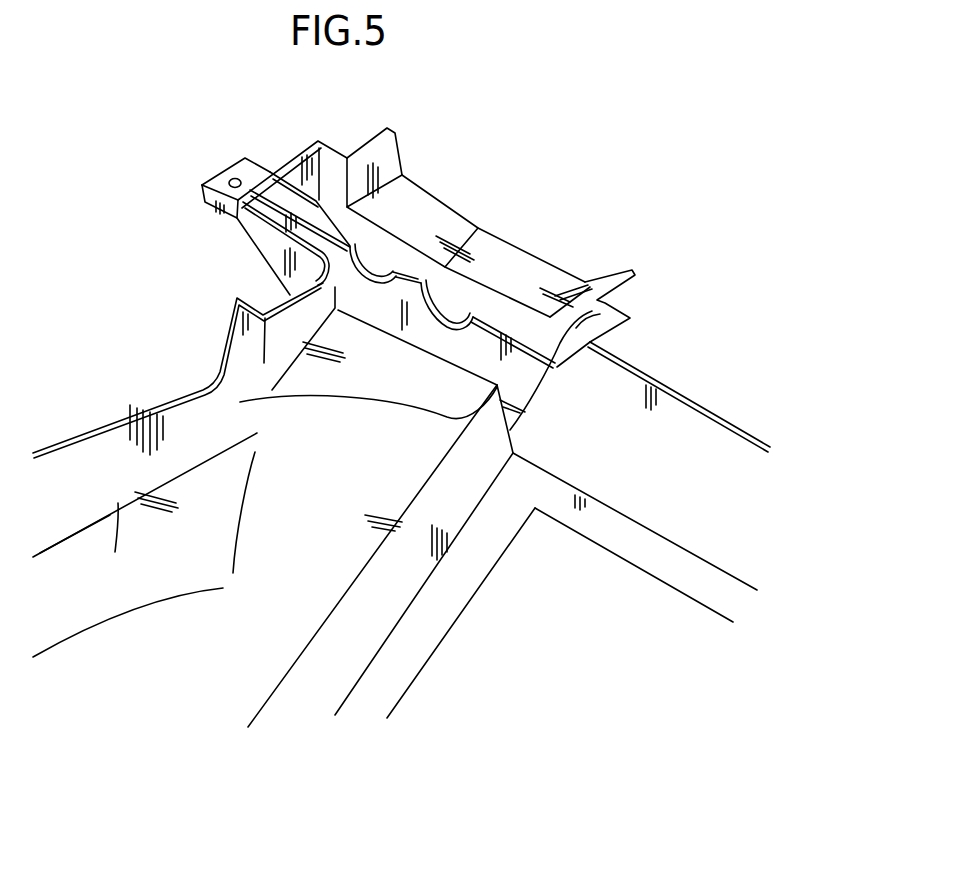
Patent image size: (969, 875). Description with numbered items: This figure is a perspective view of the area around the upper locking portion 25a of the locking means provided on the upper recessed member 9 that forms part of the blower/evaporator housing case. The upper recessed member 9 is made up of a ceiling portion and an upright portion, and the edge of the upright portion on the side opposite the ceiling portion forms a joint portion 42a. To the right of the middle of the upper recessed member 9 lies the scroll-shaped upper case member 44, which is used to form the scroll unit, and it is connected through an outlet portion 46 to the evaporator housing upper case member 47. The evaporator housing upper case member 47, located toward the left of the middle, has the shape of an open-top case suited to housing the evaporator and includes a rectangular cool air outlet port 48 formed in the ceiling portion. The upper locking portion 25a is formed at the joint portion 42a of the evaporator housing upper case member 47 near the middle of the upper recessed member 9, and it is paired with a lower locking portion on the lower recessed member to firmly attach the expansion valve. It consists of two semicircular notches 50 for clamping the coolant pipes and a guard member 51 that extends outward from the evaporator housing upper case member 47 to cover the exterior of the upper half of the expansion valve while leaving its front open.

The upper recessed member 9 is at (197, 332).
The upper locking portion 25a is at (524, 156).
The joint portion 42a is at (668, 382).
The scroll-shaped upper case member 44 is at (163, 443).
The outlet portion 46 is at (118, 500).
The evaporator housing upper case member 47 is at (692, 450).
The cool air outlet port 48 is at (650, 535).
The semicircular notch 50 is at (362, 268).
The guard member 51 is at (432, 205).